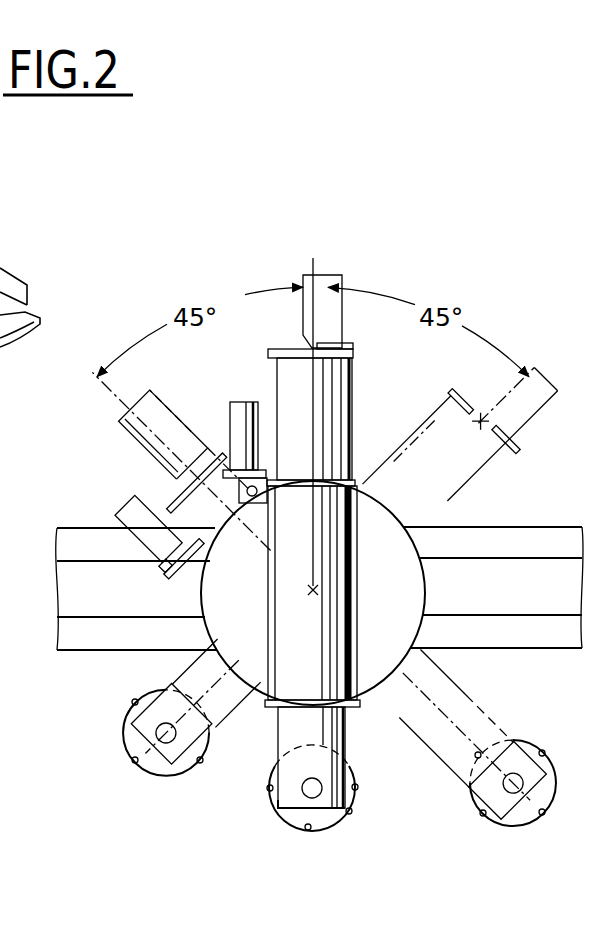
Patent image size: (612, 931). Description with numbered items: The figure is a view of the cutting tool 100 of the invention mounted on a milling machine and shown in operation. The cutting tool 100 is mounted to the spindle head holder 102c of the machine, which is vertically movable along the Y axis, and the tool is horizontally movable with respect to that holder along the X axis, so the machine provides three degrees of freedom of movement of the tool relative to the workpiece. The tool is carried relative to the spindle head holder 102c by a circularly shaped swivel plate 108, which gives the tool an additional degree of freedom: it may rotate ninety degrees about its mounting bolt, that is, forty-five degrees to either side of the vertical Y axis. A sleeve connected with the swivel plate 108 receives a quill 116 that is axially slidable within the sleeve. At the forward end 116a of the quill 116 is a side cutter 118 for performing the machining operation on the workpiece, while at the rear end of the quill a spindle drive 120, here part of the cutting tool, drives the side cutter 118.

The cutting tool 100 is at (376, 428).
The spindle head holder 102c is at (74, 530).
The swivel plate 108 is at (197, 594).
The quill 116 is at (273, 748).
The forward end of the quill 116a is at (277, 813).
The side cutter 118 is at (352, 813).
The spindle drive 120 is at (366, 323).